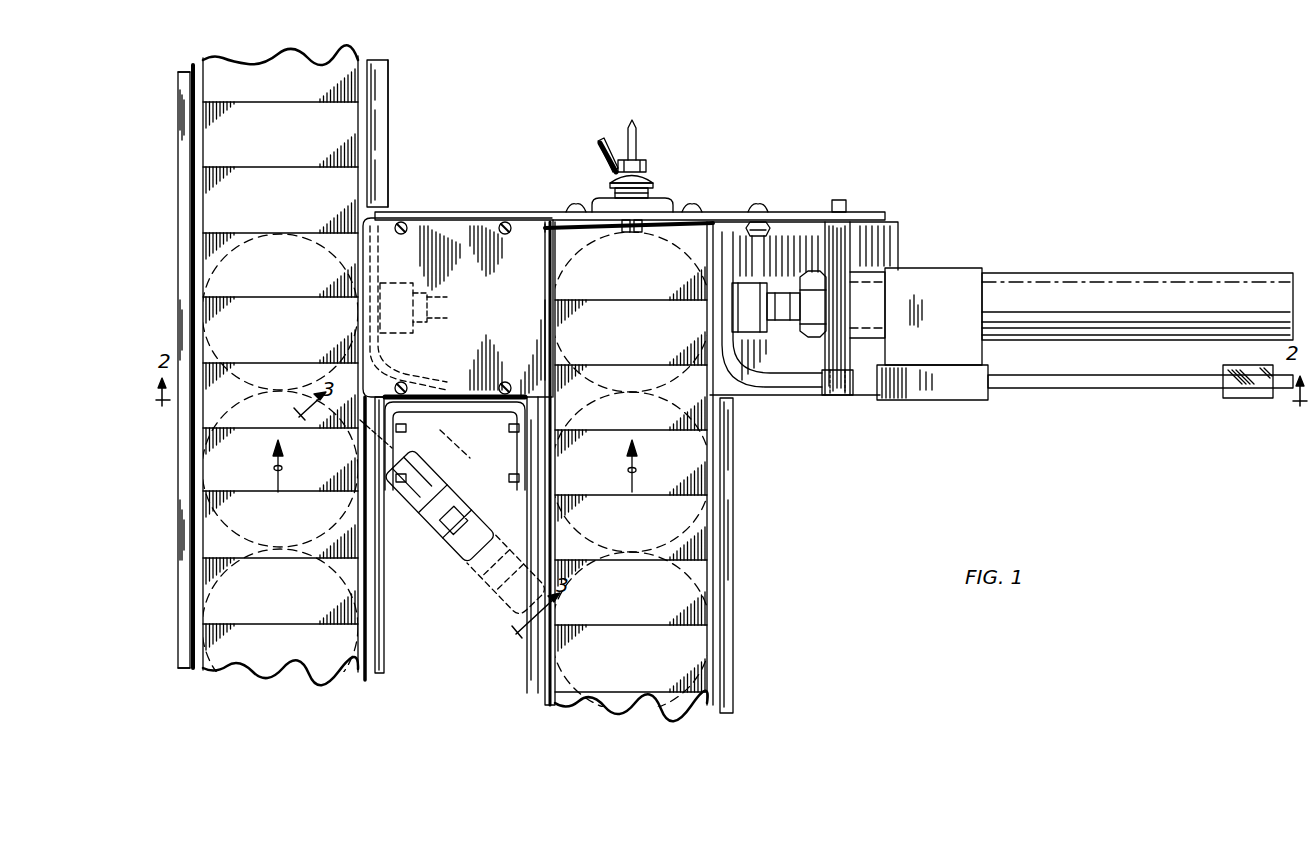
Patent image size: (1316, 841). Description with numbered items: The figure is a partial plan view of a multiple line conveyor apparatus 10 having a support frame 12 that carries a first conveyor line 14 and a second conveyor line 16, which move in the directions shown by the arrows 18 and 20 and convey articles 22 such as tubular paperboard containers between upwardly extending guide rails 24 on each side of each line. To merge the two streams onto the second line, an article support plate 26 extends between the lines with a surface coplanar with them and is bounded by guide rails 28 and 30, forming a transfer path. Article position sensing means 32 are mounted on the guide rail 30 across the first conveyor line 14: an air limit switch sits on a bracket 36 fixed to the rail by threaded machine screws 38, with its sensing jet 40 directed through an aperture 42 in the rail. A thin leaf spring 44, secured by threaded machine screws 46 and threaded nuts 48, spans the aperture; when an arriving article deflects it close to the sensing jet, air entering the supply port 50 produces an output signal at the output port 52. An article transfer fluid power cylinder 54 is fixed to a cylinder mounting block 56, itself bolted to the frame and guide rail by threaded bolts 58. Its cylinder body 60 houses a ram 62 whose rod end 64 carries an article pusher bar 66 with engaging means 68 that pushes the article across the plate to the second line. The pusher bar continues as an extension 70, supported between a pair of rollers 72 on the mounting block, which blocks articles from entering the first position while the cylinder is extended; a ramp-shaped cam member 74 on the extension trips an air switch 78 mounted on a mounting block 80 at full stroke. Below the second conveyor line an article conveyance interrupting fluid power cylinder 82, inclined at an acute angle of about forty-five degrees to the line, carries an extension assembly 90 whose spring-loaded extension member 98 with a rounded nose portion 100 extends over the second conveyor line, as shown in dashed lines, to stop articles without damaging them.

The multiple line conveyor apparatus 10 is at (467, 146).
The support frame 12 is at (388, 190).
The first conveyor line 14 is at (712, 552).
The second conveyor line 16 is at (212, 536).
The arrow 18 is at (636, 470).
The arrow 20 is at (272, 464).
The articles 22 is at (268, 232).
The guide rails 24 is at (384, 80).
The article support plate 26 is at (468, 236).
The guide rail 28 is at (460, 402).
The guide rail 30 is at (527, 220).
The article position sensing means 32 is at (656, 176).
The bracket 36 is at (670, 198).
The threaded machine screws 38 is at (572, 204).
The sensing jet 40 is at (626, 228).
The aperture 42 is at (640, 228).
The leaf spring 44 is at (578, 232).
The threaded machine screws 46 is at (762, 206).
The threaded nuts 48 is at (760, 236).
The supply port 50 is at (606, 178).
The output port 52 is at (646, 152).
The article transfer fluid power cylinder 54 is at (872, 272).
The cylinder mounting block 56 is at (848, 232).
The threaded bolts 58 is at (842, 200).
The cylinder body 60 is at (1084, 286).
The ram 62 is at (445, 292).
The rod end 64 is at (438, 322).
The article pusher bar 66 is at (796, 382).
The article engaging means 68 is at (362, 304).
The extension 70 is at (1082, 382).
The rollers 72 is at (840, 396).
The cam member 74 is at (1256, 392).
The air switch 78 is at (914, 392).
The mounting block 80 is at (950, 282).
The article conveyance interrupting fluid power cylinder 82 is at (482, 606).
The extension assembly 90 is at (420, 500).
The extension member 98 is at (358, 432).
The rounded nose portion 100 is at (362, 366).